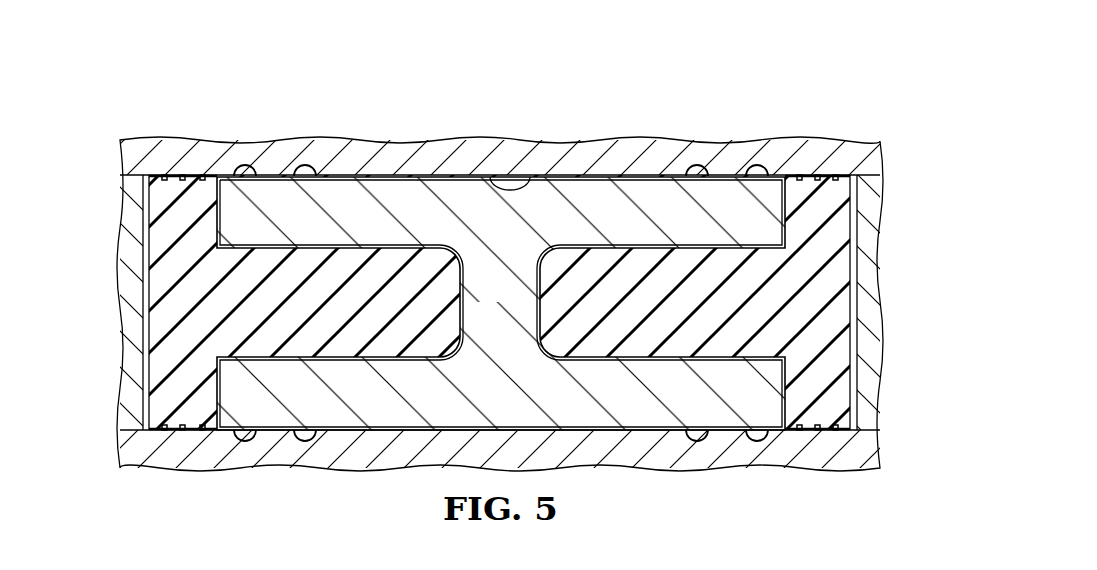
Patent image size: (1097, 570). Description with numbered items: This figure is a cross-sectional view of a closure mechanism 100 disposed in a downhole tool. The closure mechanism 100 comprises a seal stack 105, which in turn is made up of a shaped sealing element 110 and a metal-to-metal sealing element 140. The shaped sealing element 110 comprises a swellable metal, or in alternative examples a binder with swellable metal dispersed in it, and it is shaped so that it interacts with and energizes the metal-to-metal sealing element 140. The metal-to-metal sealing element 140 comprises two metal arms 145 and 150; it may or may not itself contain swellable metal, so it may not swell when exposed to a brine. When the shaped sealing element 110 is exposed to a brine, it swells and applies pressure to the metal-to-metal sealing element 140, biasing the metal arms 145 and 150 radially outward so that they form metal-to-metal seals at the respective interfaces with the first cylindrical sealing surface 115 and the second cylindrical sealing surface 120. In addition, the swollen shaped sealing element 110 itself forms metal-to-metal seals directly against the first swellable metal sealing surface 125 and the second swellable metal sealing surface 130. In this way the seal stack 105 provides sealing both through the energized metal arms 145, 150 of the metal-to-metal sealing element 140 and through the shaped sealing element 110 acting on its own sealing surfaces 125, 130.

The closure mechanism 100 is at (288, 76).
The seal stack 105 is at (130, 250).
The shaped sealing element 110 is at (838, 273).
The first cylindrical sealing surface 115 is at (528, 184).
The second cylindrical sealing surface 120 is at (416, 436).
The first swellable metal sealing surface 125 is at (192, 175).
The second swellable metal sealing surface 130 is at (173, 431).
The metal-to-metal sealing element 140 is at (606, 434).
The metal arm 145 is at (277, 417).
The metal arm 150 is at (338, 182).